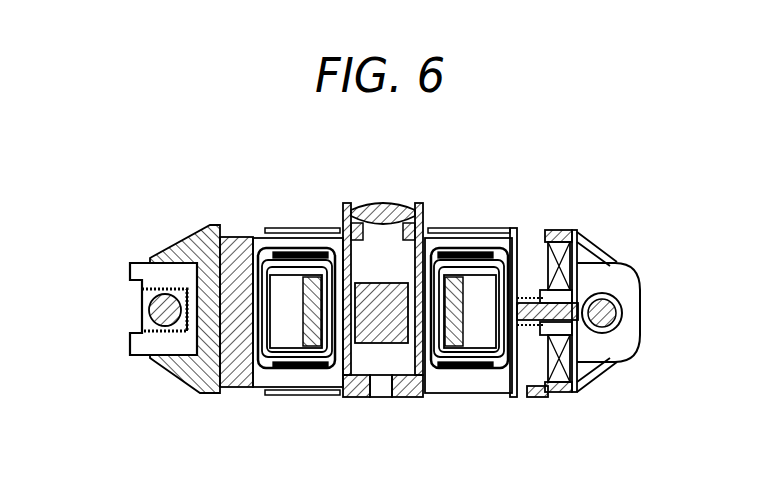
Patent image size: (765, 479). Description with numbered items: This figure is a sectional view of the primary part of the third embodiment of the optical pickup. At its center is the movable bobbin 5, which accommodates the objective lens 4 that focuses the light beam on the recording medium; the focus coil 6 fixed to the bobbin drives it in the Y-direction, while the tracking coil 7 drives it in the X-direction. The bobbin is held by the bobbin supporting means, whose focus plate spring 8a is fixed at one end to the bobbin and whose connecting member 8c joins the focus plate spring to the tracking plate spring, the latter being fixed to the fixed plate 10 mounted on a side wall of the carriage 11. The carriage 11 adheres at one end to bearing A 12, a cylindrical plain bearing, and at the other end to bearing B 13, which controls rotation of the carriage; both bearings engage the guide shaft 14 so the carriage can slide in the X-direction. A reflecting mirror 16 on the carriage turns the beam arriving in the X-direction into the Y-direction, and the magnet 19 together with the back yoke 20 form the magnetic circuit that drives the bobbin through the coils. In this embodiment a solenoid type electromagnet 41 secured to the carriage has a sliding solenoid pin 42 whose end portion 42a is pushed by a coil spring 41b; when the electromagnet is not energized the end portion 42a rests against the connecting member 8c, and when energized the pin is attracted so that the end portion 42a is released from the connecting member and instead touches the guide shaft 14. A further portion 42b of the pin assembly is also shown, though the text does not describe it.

The objective lens 4 is at (387, 205).
The movable bobbin 5 is at (428, 236).
The focus coil 6 is at (317, 252).
The tracking coil 7 is at (278, 247).
The focus plate spring 8a is at (507, 228).
The connecting member 8c is at (517, 250).
The fixed plate 10 is at (233, 237).
The carriage 11 is at (195, 385).
The bearing A 12 is at (623, 342).
The bearing B 13 is at (130, 343).
The guide shaft 14 is at (148, 305).
The reflecting mirror 16 is at (380, 325).
The magnet 19 is at (307, 345).
The back yoke 20 is at (277, 370).
The solenoid type electromagnet 41 is at (563, 252).
The coil spring 41b is at (572, 390).
The solenoid pin 42 is at (577, 267).
The end portion 42a is at (535, 397).
The bracket lower arm 42b is at (605, 372).